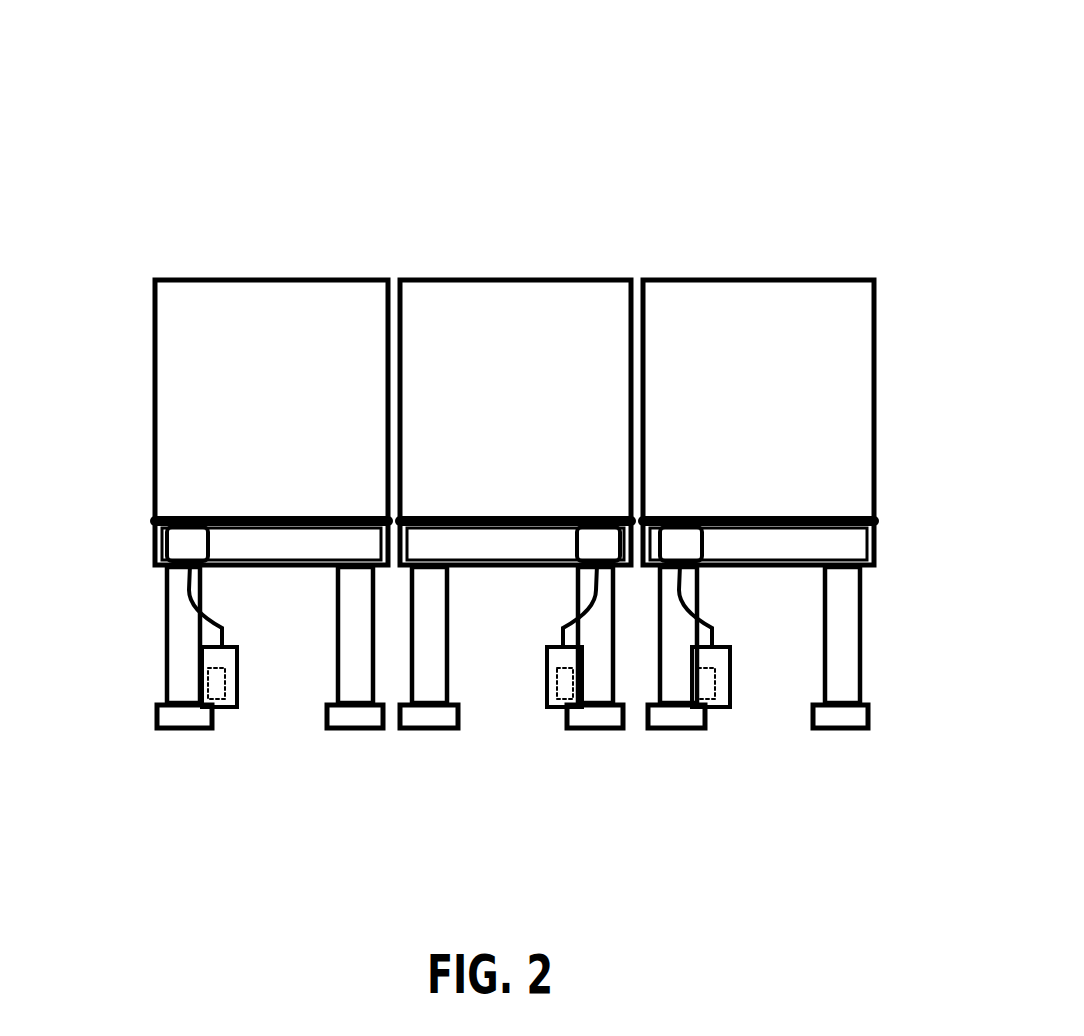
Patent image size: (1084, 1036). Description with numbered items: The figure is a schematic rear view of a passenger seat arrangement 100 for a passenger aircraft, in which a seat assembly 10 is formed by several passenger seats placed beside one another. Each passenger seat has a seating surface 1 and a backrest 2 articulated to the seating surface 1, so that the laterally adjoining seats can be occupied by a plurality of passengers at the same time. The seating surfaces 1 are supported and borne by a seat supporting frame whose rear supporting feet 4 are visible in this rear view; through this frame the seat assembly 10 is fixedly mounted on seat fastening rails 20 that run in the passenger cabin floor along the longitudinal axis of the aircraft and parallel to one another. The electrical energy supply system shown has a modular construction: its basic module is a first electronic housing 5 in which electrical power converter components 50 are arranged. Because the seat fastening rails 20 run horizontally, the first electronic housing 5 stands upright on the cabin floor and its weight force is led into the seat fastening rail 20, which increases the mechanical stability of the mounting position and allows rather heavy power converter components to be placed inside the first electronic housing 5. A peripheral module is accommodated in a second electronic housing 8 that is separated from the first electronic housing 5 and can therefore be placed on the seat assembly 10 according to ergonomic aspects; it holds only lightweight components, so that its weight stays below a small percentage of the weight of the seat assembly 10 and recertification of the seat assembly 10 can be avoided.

The passenger seat arrangement 100 is at (357, 84).
The seat assembly 10 is at (677, 222).
The backrest 2 is at (260, 290).
The seating surface 1 is at (238, 540).
The second electronic housing 8 is at (175, 545).
The rear supporting feet 4 is at (178, 605).
The first electronic housing 5 is at (210, 663).
The electrical power converter components 50 is at (215, 693).
The seat fastening rails 20 is at (172, 730).